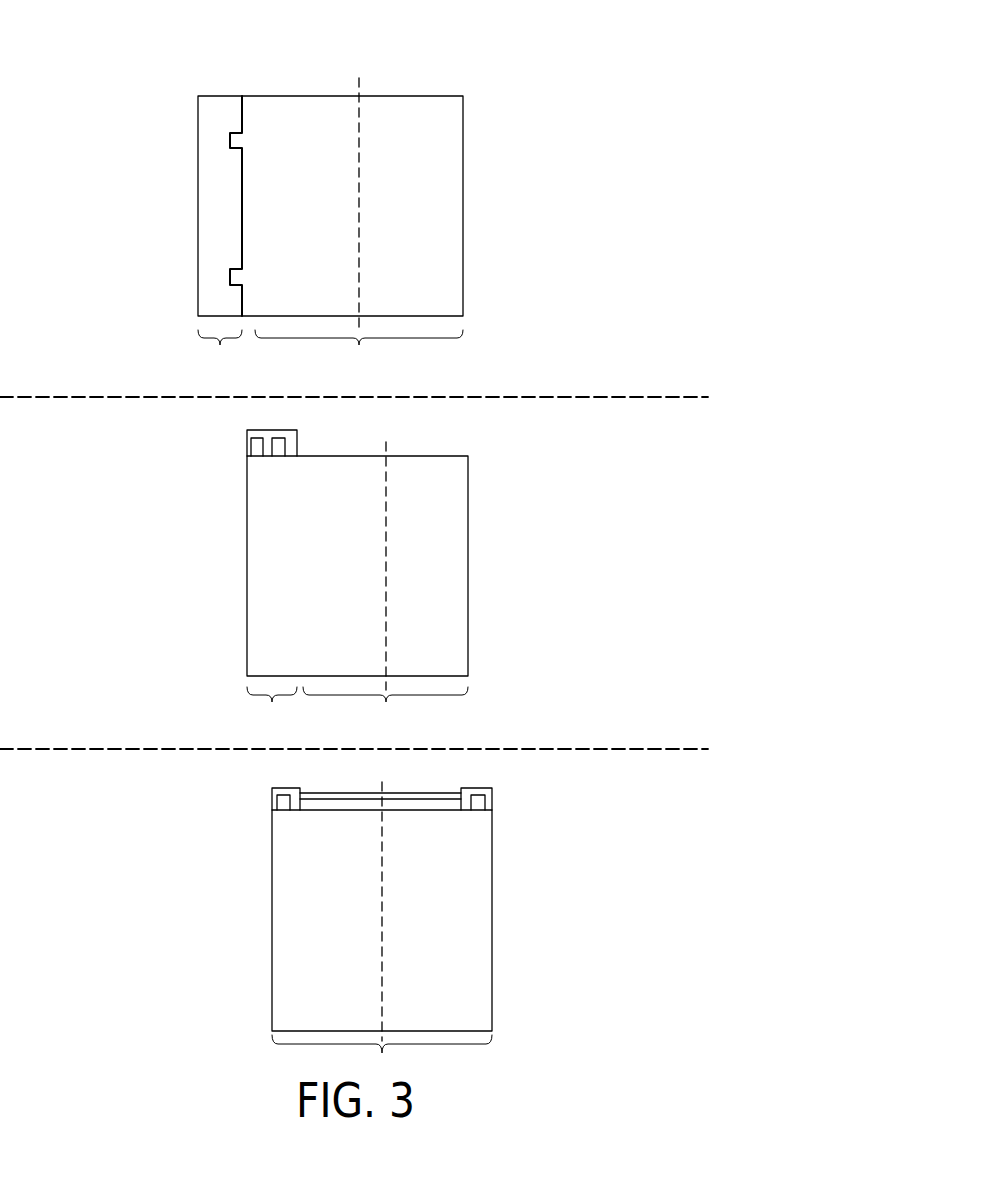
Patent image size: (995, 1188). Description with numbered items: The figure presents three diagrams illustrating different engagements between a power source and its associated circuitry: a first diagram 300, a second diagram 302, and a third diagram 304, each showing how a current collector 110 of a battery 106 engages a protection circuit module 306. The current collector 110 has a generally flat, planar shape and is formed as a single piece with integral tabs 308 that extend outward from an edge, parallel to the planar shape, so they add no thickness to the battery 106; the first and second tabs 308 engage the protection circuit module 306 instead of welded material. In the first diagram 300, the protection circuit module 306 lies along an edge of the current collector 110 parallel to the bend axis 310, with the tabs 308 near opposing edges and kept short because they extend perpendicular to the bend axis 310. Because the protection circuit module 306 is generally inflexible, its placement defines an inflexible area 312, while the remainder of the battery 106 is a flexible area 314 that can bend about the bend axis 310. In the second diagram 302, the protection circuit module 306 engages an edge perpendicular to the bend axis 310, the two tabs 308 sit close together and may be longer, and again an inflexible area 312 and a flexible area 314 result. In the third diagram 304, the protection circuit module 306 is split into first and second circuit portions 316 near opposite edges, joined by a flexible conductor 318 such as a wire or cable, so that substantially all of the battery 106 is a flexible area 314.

The first diagram 300 is at (530, 86).
The second diagram 302 is at (523, 449).
The third diagram 304 is at (541, 793).
The current collector 110 is at (427, 144).
The bend axis 310 is at (359, 192).
The protection circuit module 306 is at (250, 450).
The tabs 308 is at (237, 143).
The inflexible area 312 is at (250, 538).
The flexible area 314 is at (373, 702).
The battery 106 is at (534, 292).
The circuit portions 316 is at (461, 790).
The flexible conductor 318 is at (341, 799).